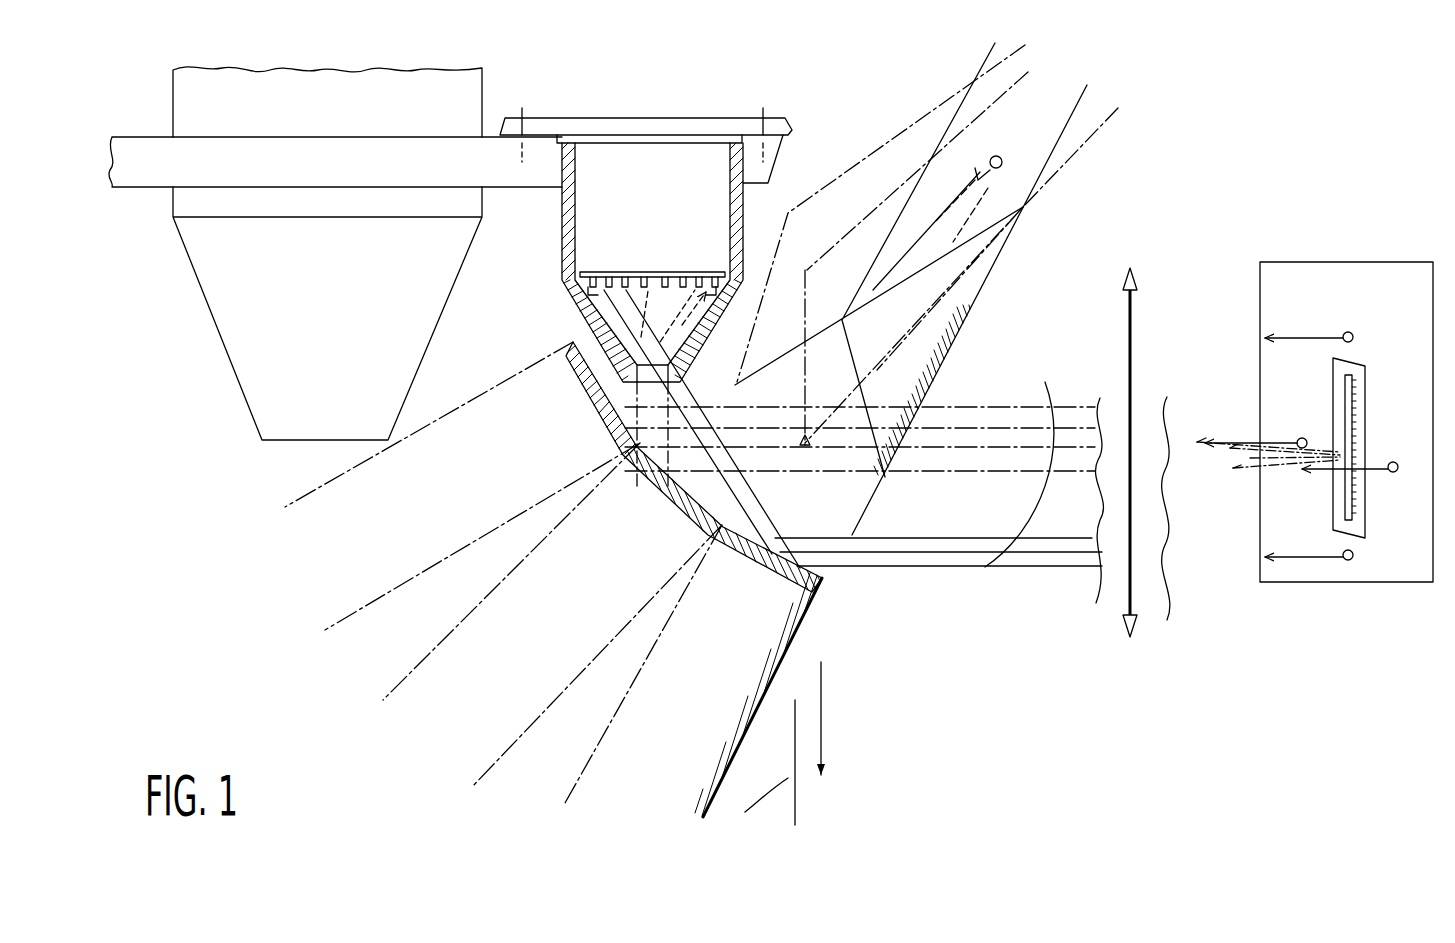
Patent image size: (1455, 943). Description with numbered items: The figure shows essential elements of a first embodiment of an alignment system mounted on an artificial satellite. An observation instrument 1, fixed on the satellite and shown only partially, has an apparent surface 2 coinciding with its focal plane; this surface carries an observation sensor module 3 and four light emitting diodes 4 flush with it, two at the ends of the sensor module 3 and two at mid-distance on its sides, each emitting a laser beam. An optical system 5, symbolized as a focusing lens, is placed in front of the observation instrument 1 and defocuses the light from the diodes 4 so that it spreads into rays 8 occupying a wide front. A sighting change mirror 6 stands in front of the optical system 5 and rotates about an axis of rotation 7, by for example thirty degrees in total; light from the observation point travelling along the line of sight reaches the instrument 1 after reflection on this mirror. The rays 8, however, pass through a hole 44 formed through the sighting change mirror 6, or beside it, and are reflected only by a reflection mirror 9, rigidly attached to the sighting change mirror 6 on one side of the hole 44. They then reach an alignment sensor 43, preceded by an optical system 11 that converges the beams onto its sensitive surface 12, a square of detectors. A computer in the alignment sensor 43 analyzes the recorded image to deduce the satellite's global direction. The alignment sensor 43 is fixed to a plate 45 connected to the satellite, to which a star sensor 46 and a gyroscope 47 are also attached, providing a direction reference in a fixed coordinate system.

The observation instrument 1 is at (1318, 586).
The apparent surface 2 is at (1325, 394).
The observation sensor module 3 is at (1353, 405).
The light emitting diodes 4 is at (1351, 332).
The optical system 5 is at (1134, 312).
The sighting change mirror 6 is at (966, 320).
The axis of rotation 7 is at (1000, 156).
The rays 8 is at (1019, 465).
The reflection mirror 9 is at (826, 576).
The optical system 11 is at (597, 393).
The sensitive surface 12 is at (630, 292).
The alignment sensor 43 is at (550, 232).
The hole 44 is at (817, 513).
The plate 45 is at (144, 180).
The star sensor 46 is at (476, 90).
The gyroscope 47 is at (242, 346).